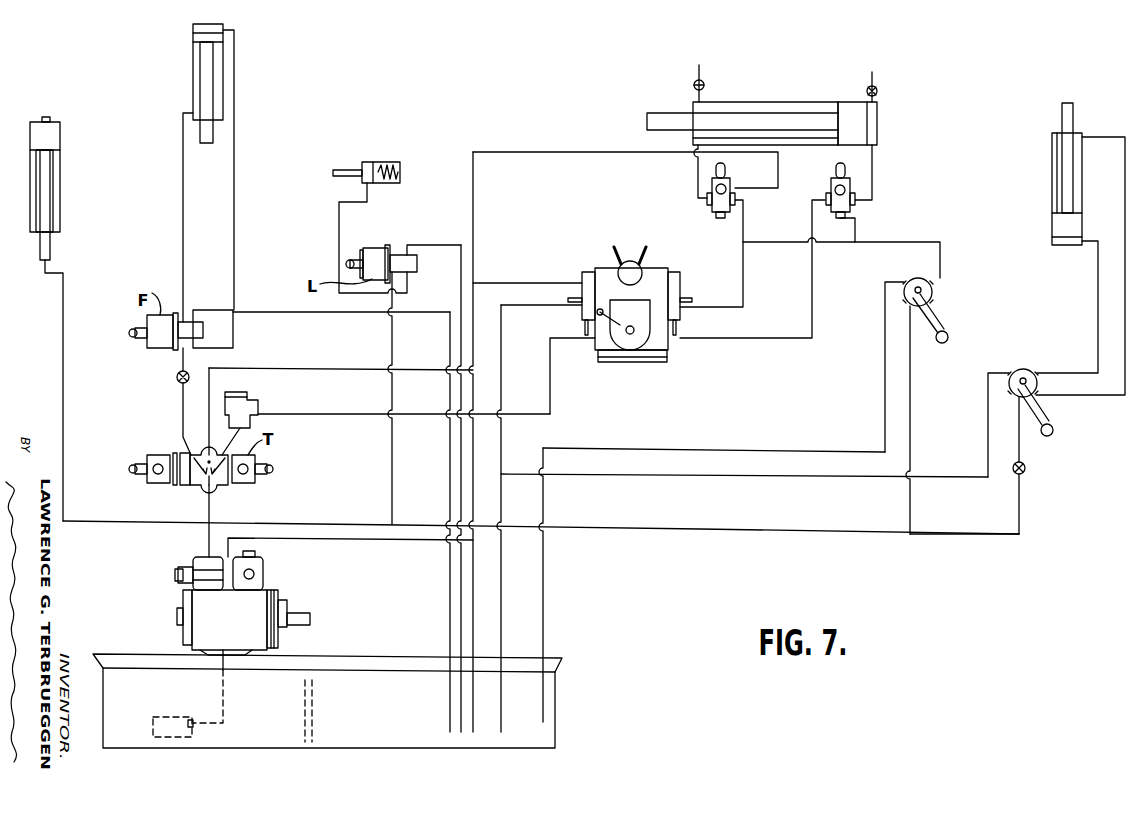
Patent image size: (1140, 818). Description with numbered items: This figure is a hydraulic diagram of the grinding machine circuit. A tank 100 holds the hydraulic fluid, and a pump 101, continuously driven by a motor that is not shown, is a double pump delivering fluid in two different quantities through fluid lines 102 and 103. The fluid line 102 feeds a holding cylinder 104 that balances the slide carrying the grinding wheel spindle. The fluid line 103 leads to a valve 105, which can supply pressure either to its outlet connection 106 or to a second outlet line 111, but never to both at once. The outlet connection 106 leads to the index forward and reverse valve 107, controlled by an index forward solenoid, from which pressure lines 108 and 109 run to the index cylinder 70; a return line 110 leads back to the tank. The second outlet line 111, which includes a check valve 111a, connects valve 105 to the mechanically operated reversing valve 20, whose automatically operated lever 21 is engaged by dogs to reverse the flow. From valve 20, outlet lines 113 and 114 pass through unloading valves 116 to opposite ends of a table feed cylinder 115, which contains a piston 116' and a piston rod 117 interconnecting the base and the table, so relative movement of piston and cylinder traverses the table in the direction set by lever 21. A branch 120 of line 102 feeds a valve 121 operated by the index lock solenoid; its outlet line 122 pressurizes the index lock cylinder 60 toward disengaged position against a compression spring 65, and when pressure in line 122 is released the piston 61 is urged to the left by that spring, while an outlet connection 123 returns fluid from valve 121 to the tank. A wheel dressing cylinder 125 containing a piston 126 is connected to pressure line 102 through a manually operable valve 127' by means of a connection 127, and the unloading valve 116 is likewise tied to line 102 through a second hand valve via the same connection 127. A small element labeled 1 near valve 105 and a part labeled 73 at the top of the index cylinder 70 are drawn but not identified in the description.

The inlet port block 1 is at (157, 455).
The mechanically operated reversing valve 20 is at (662, 281).
The automatically operated lever 21 is at (650, 258).
The index lock cylinder 60 is at (389, 162).
The piston 61 is at (355, 167).
The compression spring 65 is at (396, 183).
The index cylinder 70 is at (193, 84).
The piston rod 73 is at (206, 40).
The tank 100 is at (548, 708).
The pump 101 is at (258, 600).
The fluid line 102 is at (207, 542).
The fluid line 103 is at (250, 530).
The holding cylinder 104 is at (61, 187).
The valve 105 is at (198, 488).
The outlet connection 106 is at (181, 403).
The index forward and reverse valve 107 is at (190, 320).
The pressure line 108 is at (237, 184).
The pressure line 109 is at (183, 201).
The return line 110 is at (281, 313).
The second outlet line 111 is at (304, 415).
The check valve 111a is at (248, 397).
The outlet line 113 is at (744, 287).
The outlet line 114 is at (813, 322).
The table feed cylinder 115 is at (768, 102).
The unloading valve 116 is at (782, 193).
The piston 116' is at (886, 123).
The piston rod 117 is at (668, 113).
The branch 120 is at (394, 468).
The valve 121 is at (414, 272).
The outlet line 122 is at (339, 226).
The outlet connection 123 is at (466, 265).
The wheel dressing cylinder 125 is at (1078, 201).
The piston 126 is at (1055, 227).
The connection 127 is at (912, 559).
The manually operable valve 127' is at (1046, 451).